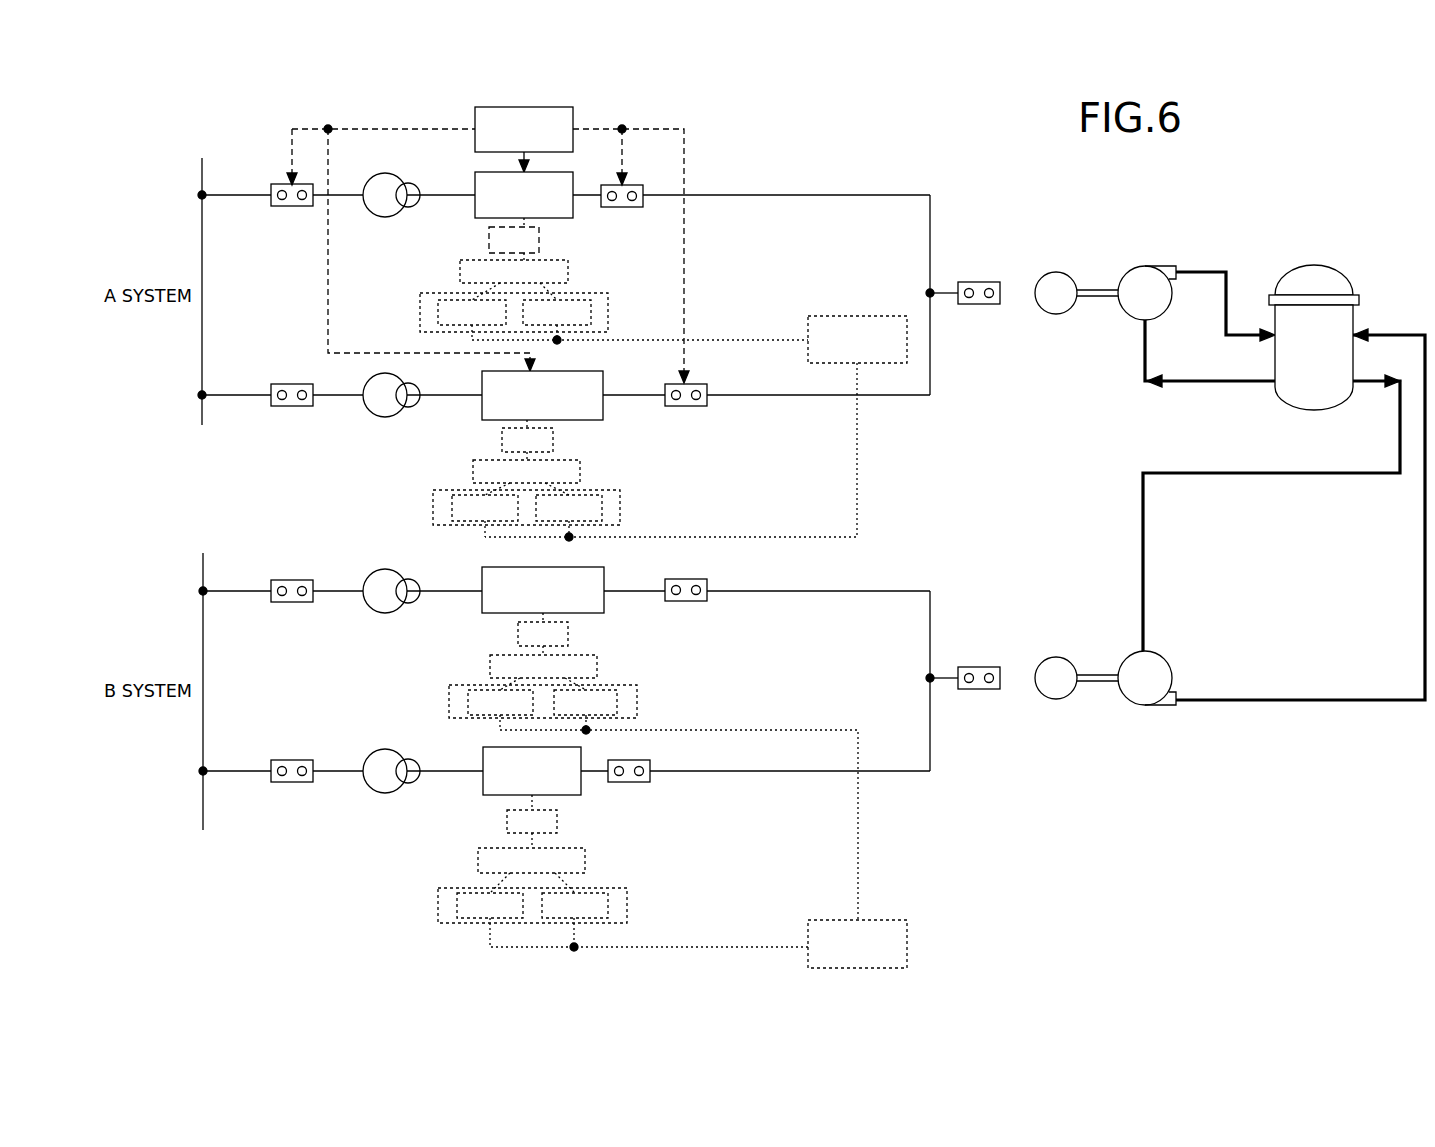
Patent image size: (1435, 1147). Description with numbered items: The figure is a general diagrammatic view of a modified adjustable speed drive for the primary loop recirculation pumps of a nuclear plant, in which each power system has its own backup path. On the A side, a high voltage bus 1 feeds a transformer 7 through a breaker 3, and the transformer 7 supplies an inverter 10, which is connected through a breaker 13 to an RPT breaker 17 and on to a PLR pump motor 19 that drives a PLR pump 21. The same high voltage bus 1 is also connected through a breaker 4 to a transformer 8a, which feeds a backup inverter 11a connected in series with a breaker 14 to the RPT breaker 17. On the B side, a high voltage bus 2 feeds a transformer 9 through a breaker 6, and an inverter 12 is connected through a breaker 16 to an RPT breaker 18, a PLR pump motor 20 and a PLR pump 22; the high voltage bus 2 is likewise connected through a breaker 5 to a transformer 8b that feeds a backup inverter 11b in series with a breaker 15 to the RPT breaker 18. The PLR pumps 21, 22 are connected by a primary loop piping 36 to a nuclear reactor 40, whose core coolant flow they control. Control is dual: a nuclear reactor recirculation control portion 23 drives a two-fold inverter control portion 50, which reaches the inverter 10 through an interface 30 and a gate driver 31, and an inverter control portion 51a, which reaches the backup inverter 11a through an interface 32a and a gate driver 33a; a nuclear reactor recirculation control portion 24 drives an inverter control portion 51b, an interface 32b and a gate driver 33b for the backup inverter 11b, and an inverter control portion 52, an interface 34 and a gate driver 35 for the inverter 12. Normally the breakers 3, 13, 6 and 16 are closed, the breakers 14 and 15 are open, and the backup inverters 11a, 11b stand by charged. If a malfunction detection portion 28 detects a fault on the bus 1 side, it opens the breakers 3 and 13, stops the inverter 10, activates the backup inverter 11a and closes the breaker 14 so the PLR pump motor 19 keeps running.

The high voltage bus 1 is at (200, 172).
The high voltage bus 2 is at (201, 570).
The breaker 3 is at (282, 184).
The breaker 4 is at (282, 384).
The breaker 5 is at (290, 580).
The breaker 6 is at (288, 760).
The transformer 7 is at (385, 217).
The transformer 8a is at (385, 417).
The transformer 8b is at (385, 613).
The transformer 9 is at (385, 793).
The inverter 10 is at (475, 186).
The backup inverter 11a is at (482, 385).
The backup inverter 11b is at (482, 580).
The inverter 12 is at (483, 784).
The breaker 13 is at (630, 185).
The breaker 14 is at (700, 384).
The breaker 15 is at (690, 579).
The breaker 16 is at (648, 782).
The RPT breaker 17 is at (980, 282).
The RPT breaker 18 is at (978, 689).
The PLR pump motor 19 is at (1056, 272).
The PLR pump motor 20 is at (1056, 699).
The PLR pump 21 is at (1145, 266).
The PLR pump 22 is at (1145, 705).
The nuclear reactor recirculation control portion 23 is at (853, 316).
The nuclear reactor recirculation control portion 24 is at (875, 920).
The malfunction detection portion 28 is at (475, 116).
The interface 30 is at (570, 272).
The gate driver 31 is at (542, 241).
The interface 32a is at (582, 472).
The interface 32b is at (598, 667).
The gate driver 33a is at (556, 441).
The gate driver 33b is at (570, 634).
The interface 34 is at (586, 860).
The gate driver 35 is at (560, 822).
The primary loop piping 36 is at (1143, 521).
The nuclear reactor 40 is at (1313, 265).
The inverter control portion 50 is at (420, 311).
The inverter control portion 51a is at (433, 507).
The inverter control portion 51b is at (449, 703).
The inverter control portion 52 is at (438, 905).